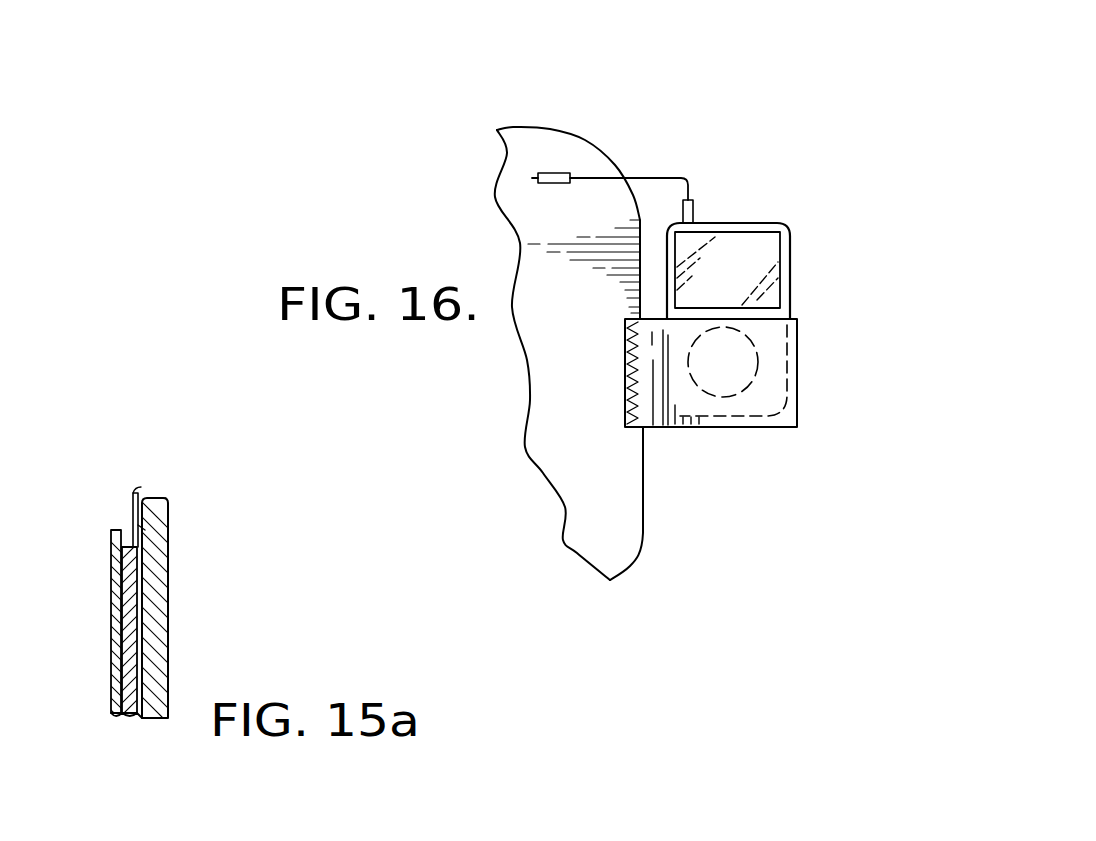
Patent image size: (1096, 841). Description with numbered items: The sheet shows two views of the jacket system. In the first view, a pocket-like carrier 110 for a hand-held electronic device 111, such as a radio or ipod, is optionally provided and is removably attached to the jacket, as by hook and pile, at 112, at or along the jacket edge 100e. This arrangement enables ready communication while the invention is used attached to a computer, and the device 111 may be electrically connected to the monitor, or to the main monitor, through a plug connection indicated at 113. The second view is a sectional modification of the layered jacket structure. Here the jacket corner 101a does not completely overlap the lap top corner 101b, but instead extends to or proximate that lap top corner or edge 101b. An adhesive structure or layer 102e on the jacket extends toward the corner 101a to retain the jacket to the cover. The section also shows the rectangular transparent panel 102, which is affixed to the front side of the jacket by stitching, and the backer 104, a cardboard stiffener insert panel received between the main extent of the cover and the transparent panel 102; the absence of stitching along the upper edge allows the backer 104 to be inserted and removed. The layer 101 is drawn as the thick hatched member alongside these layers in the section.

In FIG. 16, the jacket edge 100e is at (643, 473).
In FIG. 16, the pocket-like carrier 110 is at (660, 301).
In FIG. 16, the hand-held electronic device 111 is at (790, 263).
In FIG. 16, the hook and pile attachment 112 is at (633, 367).
In FIG. 16, the plug connection 113 is at (553, 173).
In FIG. 15A, the first layer 101 is at (157, 638).
In FIG. 15A, the jacket corner 101a is at (140, 470).
In FIG. 15A, the lap top corner 101b is at (163, 497).
In FIG. 15A, the transparent panel 102 is at (110, 658).
In FIG. 15A, the adhesive layer 102e is at (145, 528).
In FIG. 15A, the backer 104 is at (128, 577).